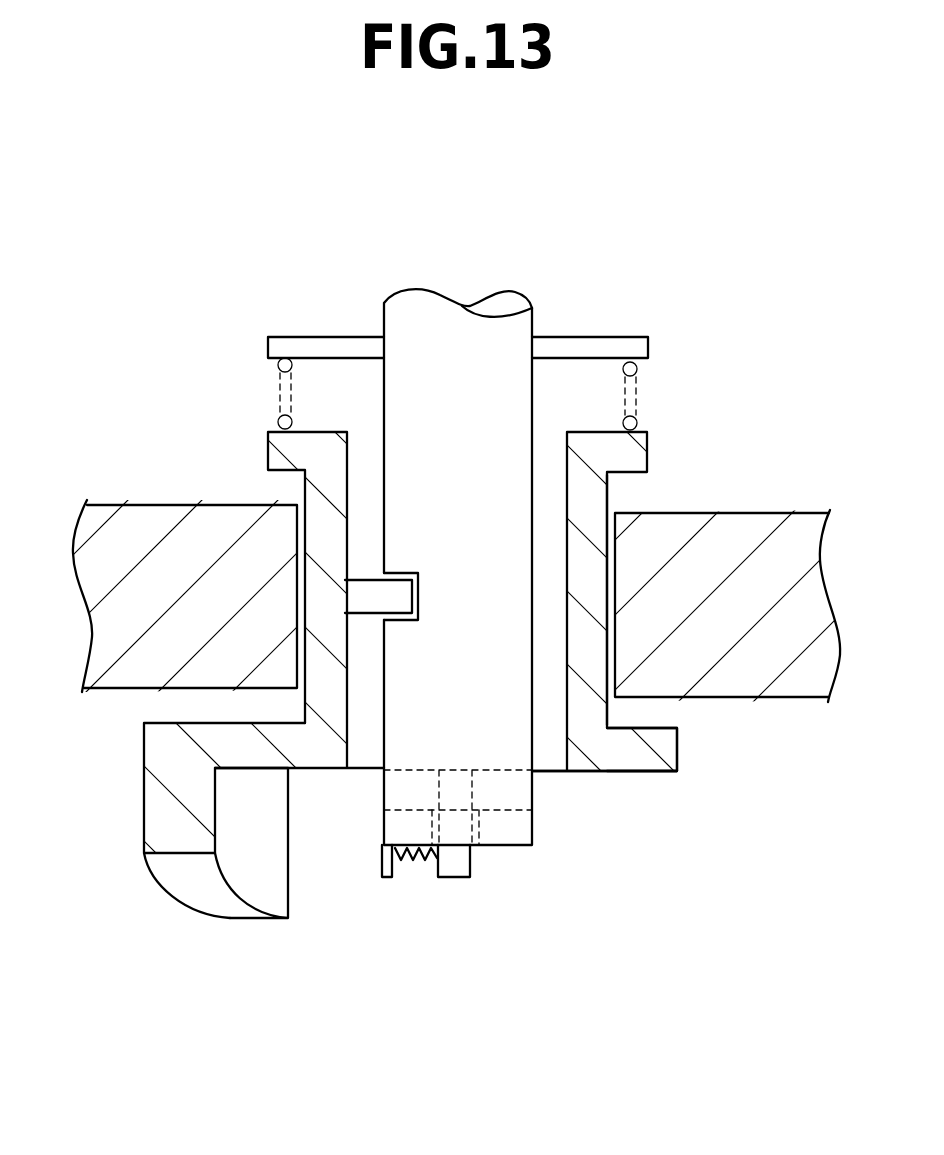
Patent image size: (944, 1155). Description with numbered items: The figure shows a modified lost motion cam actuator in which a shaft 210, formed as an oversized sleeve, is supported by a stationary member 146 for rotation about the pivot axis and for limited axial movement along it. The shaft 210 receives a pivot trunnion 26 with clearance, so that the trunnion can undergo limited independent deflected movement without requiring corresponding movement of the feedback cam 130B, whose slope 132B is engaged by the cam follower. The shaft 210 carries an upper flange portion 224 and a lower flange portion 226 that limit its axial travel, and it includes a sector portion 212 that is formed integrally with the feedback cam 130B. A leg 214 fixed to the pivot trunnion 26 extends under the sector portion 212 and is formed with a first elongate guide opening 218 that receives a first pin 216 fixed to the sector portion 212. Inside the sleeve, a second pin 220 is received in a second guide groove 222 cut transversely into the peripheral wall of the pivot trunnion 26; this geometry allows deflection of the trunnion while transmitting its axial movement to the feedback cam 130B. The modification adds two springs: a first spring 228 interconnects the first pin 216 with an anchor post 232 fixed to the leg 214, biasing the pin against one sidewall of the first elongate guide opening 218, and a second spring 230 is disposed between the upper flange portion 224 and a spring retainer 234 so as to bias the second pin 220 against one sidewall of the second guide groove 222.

The pivot trunnion 26 is at (535, 396).
The spring retainer 234 is at (605, 347).
The second spring 230 is at (640, 369).
The upper flange portion 224 is at (648, 455).
The shaft 210 is at (608, 488).
The stationary member 146 is at (802, 520).
The second pin 220 is at (372, 600).
The second guide groove 222 is at (412, 600).
The lower flange portion 226 is at (678, 750).
The sector portion 212 is at (652, 773).
The leg 214 is at (495, 810).
The first elongate guide opening 218 is at (477, 822).
The first pin 216 is at (453, 876).
The first spring 228 is at (408, 866).
The anchor post 232 is at (385, 878).
The feedback cam 130B is at (157, 882).
The slope 132B is at (233, 905).